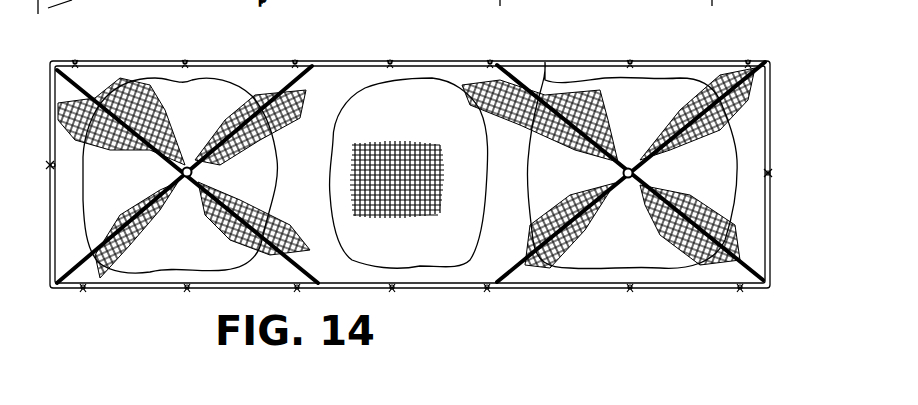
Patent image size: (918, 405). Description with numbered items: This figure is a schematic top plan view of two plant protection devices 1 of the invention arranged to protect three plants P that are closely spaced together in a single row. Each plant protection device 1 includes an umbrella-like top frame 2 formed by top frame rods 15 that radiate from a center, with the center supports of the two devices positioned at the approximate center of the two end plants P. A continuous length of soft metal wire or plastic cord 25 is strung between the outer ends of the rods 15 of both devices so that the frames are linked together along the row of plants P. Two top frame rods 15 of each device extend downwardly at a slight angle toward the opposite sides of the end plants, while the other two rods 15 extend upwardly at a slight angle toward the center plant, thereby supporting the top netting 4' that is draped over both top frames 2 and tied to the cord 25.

The plant protection device 1 is at (80, 238).
The top frame 2 is at (233, 172).
The top frame rods 15 is at (77, 92).
The cord 25 is at (56, 198).
The top netting 4' is at (50, 128).
The plants P is at (165, 92).